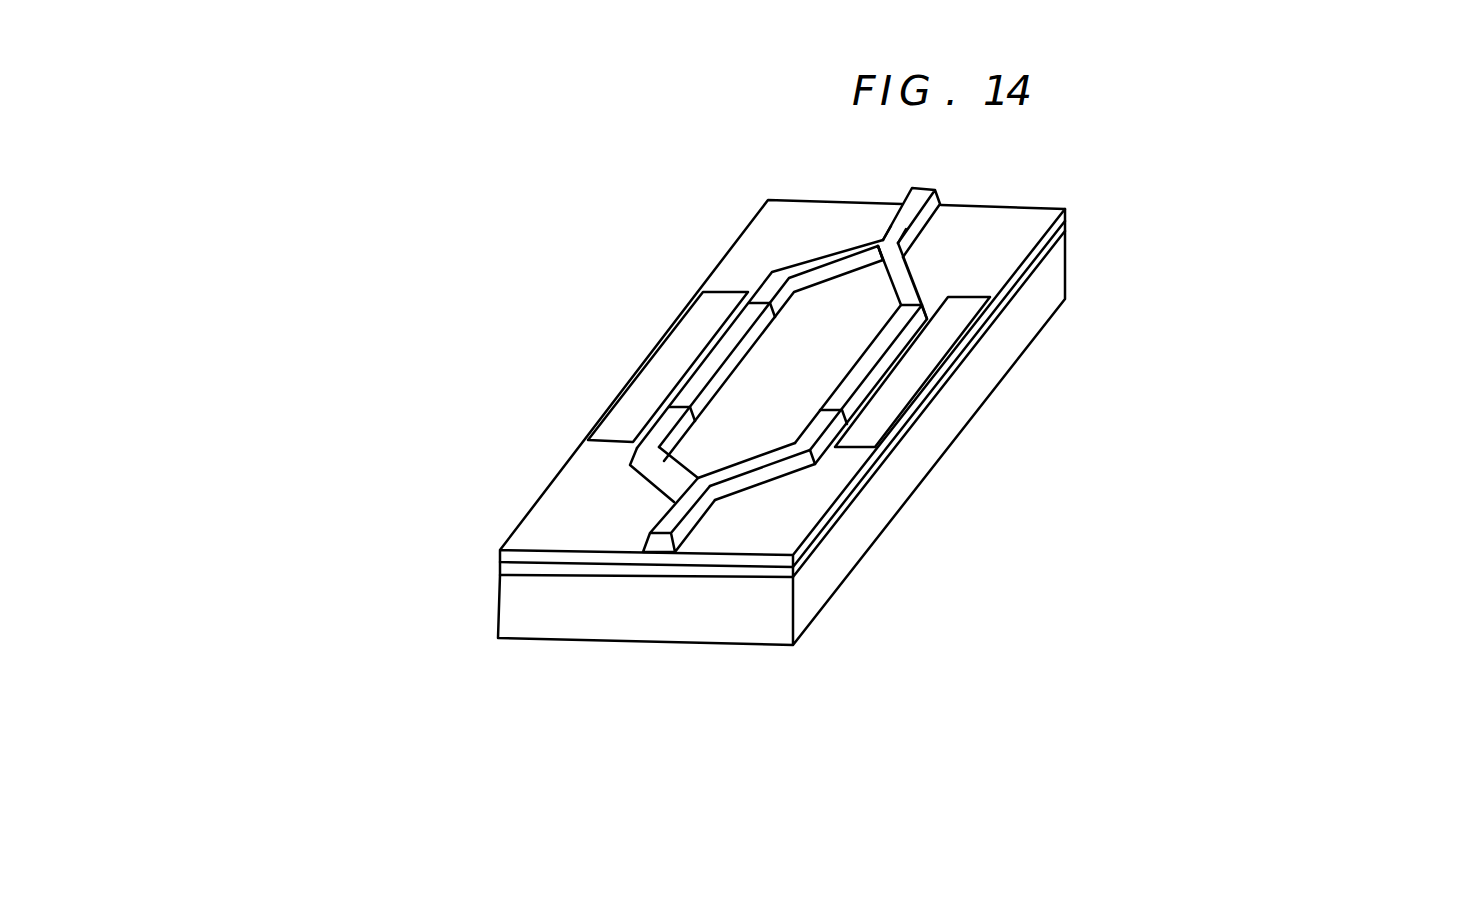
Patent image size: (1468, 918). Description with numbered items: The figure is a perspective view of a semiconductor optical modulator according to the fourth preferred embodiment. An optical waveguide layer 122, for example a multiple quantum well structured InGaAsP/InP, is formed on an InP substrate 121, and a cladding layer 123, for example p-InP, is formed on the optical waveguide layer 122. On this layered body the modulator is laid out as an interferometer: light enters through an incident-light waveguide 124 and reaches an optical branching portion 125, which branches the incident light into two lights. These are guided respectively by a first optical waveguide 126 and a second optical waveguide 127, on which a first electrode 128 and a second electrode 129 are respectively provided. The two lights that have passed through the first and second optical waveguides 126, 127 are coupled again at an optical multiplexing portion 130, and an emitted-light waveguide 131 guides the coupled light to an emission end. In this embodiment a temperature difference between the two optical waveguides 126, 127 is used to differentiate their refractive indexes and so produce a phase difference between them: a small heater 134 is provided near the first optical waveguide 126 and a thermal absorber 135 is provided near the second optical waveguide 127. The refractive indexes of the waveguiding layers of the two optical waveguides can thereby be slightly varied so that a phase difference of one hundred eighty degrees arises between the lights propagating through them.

The InP substrate 121 is at (795, 612).
The optical waveguide layer 122 is at (795, 572).
The cladding layer 123 is at (807, 538).
The incident-light waveguide 124 is at (656, 541).
The optical branching portion 125 is at (678, 493).
The first optical waveguide 126 is at (663, 427).
The second optical waveguide 127 is at (822, 421).
The first electrode 128 is at (707, 369).
The second electrode 129 is at (863, 368).
The optical multiplexing portion 130 is at (880, 243).
The emitted-light waveguide 131 is at (905, 212).
The heater 134 is at (707, 317).
The thermal absorber 135 is at (952, 328).